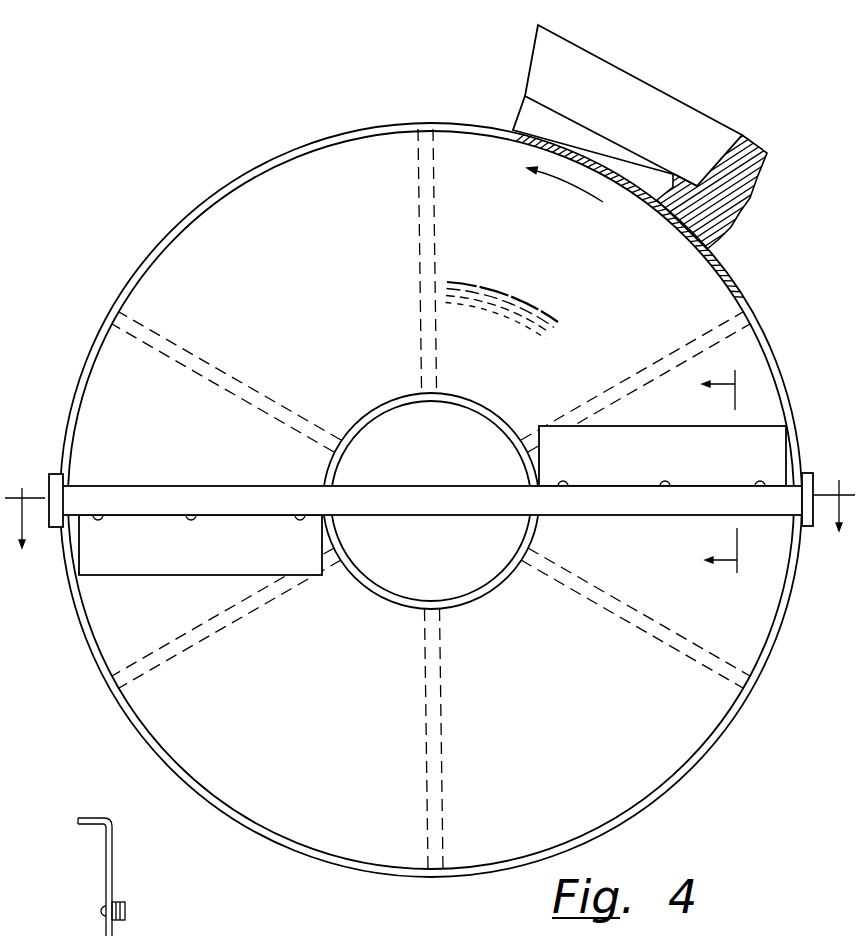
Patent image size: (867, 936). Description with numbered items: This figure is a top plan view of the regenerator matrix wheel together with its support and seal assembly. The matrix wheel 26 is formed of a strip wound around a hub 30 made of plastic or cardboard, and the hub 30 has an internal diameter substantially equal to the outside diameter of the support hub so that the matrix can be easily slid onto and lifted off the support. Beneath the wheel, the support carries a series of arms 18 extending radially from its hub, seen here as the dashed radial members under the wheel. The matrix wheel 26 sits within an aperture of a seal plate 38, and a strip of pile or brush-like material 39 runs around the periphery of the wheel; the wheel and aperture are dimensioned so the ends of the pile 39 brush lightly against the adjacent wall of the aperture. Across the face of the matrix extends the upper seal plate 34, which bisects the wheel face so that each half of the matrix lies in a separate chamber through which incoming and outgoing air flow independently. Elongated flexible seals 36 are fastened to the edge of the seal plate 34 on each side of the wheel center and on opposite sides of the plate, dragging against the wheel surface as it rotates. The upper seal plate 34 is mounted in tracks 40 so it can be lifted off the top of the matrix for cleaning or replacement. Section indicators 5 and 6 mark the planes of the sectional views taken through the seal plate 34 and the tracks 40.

The arms 18 is at (215, 360).
The matrix wheel 26 is at (510, 293).
The hub 30 is at (510, 577).
The upper seal plate 34 is at (193, 485).
The flexible seals 36 is at (158, 577).
The seal plate 38 is at (602, 58).
The strip of pile or brush-like material 39 is at (496, 127).
The tracks 40 is at (55, 474).
The section line 5- 5 is at (727, 480).
The section line 6- 6 is at (429, 512).